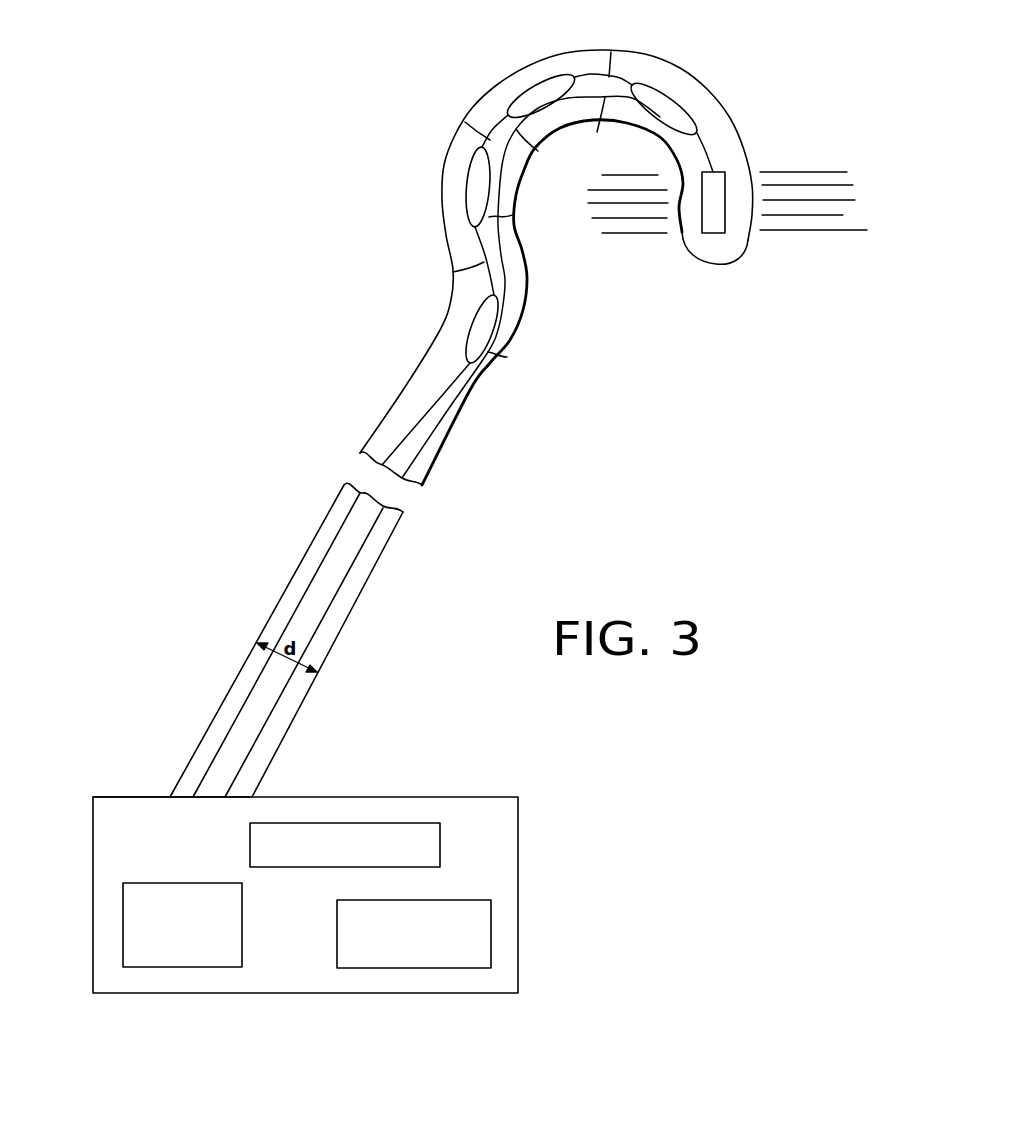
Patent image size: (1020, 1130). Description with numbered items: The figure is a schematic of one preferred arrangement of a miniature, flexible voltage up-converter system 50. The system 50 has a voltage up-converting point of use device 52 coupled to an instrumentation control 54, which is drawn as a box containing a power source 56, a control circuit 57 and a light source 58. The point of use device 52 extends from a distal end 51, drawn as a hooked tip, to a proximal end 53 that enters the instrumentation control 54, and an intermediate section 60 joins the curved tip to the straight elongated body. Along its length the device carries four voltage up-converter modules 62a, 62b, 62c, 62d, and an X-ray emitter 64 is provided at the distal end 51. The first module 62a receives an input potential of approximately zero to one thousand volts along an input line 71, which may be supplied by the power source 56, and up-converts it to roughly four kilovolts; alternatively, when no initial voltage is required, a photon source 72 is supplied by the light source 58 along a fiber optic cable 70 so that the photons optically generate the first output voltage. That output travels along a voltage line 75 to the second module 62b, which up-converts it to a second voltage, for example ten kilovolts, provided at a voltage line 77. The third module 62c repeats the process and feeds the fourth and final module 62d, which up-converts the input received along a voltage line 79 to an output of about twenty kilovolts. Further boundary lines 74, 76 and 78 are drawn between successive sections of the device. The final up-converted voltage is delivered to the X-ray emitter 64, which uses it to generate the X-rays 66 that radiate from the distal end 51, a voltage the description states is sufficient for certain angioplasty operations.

The voltage up-converter system 50 is at (400, 120).
The distal end 51 is at (757, 157).
The voltage up-converting point of use device 52 is at (313, 512).
The proximal end 53 is at (193, 757).
The instrumentation control 54 is at (519, 922).
The power source 56 is at (123, 945).
The control circuit 57 is at (440, 846).
The light source 58 is at (403, 968).
The intermediate body section 60 is at (458, 420).
The first voltage up-converter module 62a is at (471, 320).
The second voltage up-converter module 62b is at (466, 193).
The third voltage up-converter module 62c is at (532, 86).
The fourth voltage up-converter module 62d is at (677, 100).
The X-ray emitter 64 is at (723, 233).
The X-rays 66 is at (648, 238).
The fiber optic cable 70 is at (323, 623).
The input line 71 is at (298, 602).
The photon source 72 is at (507, 357).
The segment boundary 74 is at (514, 214).
The voltage line 75 is at (455, 271).
The segment boundary 76 is at (538, 151).
The voltage line 77 is at (465, 122).
The segment boundary 78 is at (595, 128).
The voltage line 79 is at (611, 52).